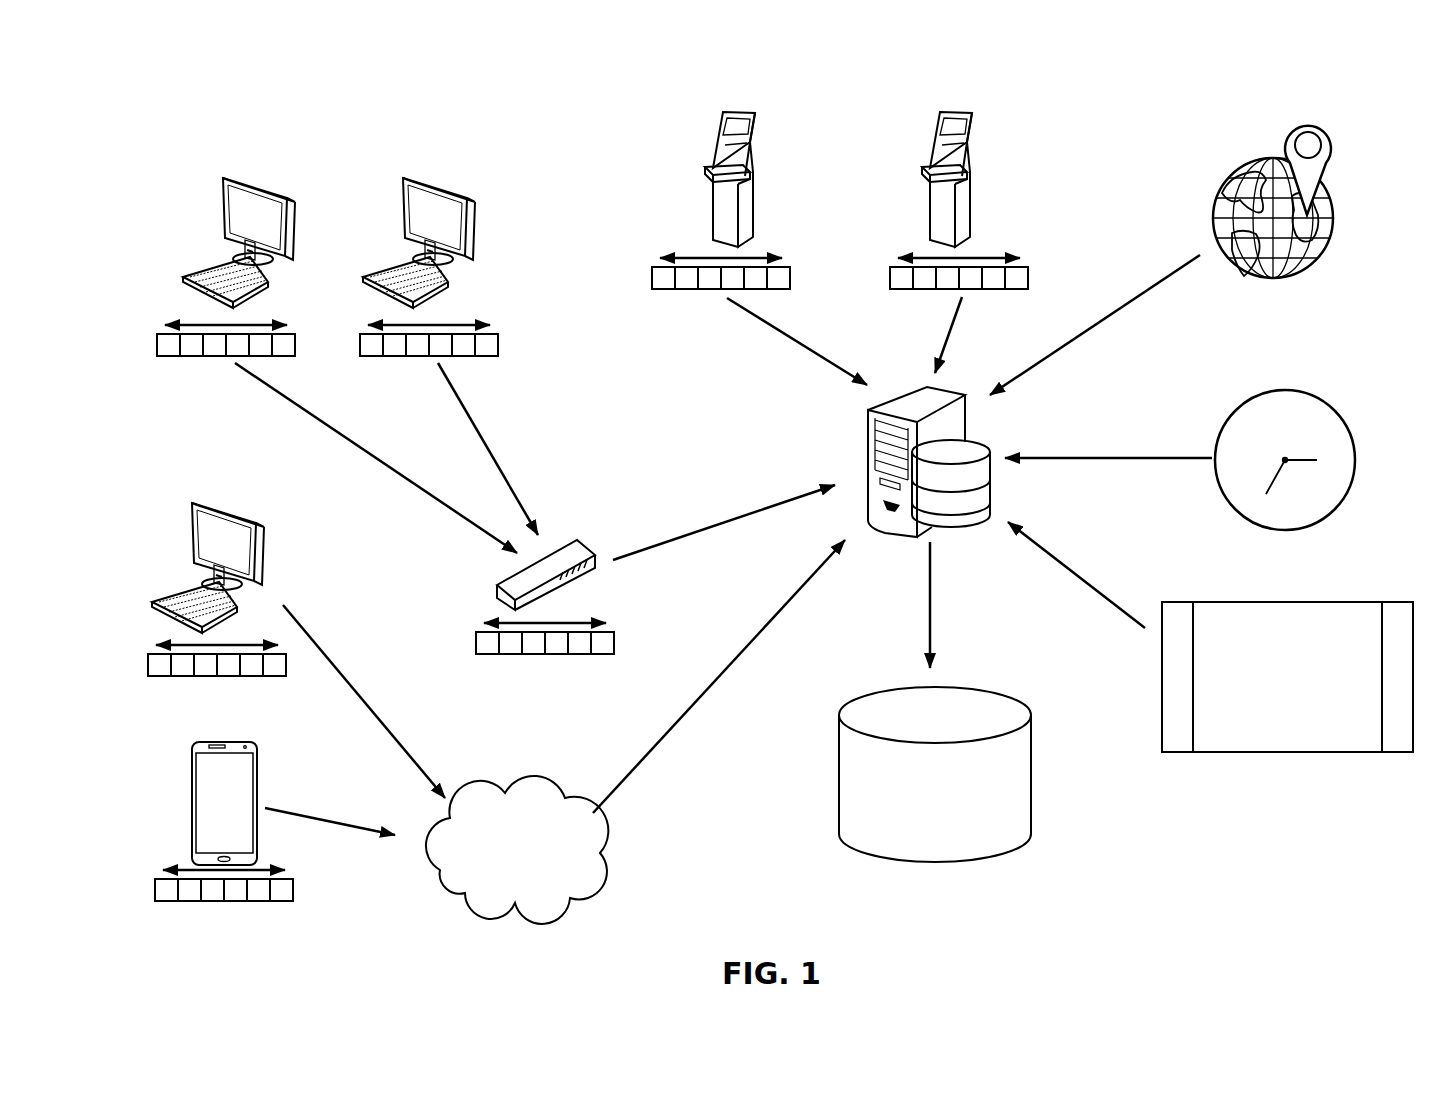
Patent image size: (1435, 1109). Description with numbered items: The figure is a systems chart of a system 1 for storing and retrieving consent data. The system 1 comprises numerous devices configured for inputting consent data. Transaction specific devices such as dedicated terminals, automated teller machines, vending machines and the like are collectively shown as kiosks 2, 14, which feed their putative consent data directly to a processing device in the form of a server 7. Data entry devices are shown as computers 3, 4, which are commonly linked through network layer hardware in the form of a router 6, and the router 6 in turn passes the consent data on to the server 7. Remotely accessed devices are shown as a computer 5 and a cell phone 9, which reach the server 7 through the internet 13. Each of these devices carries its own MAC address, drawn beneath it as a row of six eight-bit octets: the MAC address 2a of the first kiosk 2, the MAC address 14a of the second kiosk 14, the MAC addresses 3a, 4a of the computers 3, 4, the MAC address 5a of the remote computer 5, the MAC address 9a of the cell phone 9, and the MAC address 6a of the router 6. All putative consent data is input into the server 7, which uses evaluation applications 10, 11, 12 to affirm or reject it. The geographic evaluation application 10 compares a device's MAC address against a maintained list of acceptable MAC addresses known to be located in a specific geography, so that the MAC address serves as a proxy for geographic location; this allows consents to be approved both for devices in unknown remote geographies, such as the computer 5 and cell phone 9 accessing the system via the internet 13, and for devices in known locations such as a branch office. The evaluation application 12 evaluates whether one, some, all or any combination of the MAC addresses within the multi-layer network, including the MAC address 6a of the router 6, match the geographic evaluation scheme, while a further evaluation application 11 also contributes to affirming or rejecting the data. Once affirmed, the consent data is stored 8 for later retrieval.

The system 1 is at (200, 105).
The kiosk 2 is at (738, 112).
The MAC address 2a is at (762, 258).
The computer 3 is at (416, 180).
The MAC address 3a is at (480, 322).
The computer 4 is at (238, 180).
The MAC address 4a is at (278, 322).
The computer 5 is at (208, 503).
The MAC address 5a is at (168, 642).
The router 6 is at (560, 548).
The MAC address 6a is at (585, 622).
The server 7 is at (868, 442).
The stored consent data 8 is at (882, 688).
The cell phone 9 is at (205, 742).
The MAC address 9a is at (185, 868).
The geographic evaluation application 10 is at (1335, 215).
The evaluation application 11 is at (1355, 447).
The evaluation application 12 is at (1218, 602).
The internet 13 is at (510, 790).
The kiosk 14 is at (953, 112).
The MAC address 14a is at (988, 258).